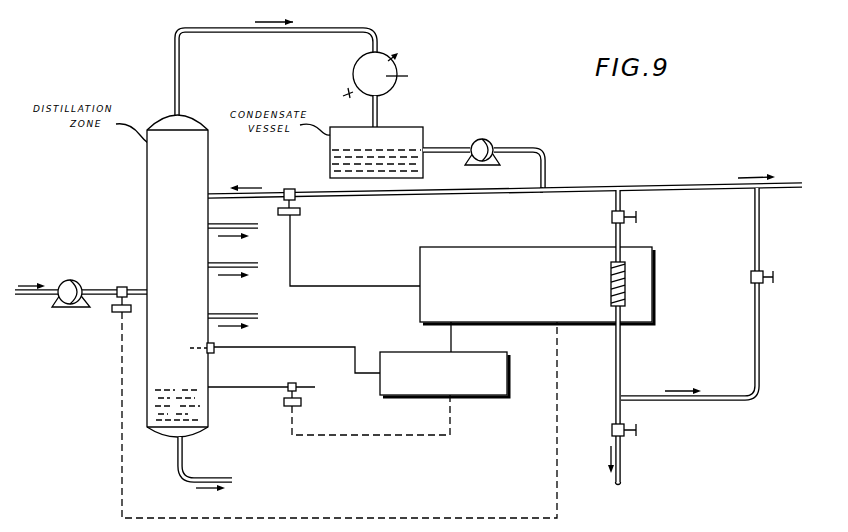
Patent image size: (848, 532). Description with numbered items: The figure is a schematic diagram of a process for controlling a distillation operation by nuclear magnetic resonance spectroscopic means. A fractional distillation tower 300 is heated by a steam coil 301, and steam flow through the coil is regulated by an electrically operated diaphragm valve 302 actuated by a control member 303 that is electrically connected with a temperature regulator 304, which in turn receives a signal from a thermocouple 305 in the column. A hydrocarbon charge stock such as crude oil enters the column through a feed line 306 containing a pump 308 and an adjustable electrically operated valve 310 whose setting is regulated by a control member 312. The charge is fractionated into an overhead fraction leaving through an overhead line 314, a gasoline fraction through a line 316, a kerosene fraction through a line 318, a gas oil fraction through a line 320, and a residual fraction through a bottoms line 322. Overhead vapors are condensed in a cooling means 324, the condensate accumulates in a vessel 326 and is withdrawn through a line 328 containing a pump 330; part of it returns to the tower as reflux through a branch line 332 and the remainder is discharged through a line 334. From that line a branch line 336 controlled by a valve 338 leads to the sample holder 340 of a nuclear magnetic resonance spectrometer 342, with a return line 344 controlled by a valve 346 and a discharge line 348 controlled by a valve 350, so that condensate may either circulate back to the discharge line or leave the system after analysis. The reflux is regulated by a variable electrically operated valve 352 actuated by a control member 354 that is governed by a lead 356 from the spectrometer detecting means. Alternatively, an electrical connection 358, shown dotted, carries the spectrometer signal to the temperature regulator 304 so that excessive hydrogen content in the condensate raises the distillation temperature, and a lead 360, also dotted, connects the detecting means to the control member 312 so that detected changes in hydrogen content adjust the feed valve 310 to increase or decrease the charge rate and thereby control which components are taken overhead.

The fractional distillation tower 300 is at (191, 271).
The steam coil 301 is at (198, 395).
The electrically operated diaphragm valve 302 is at (292, 383).
The control member 303 is at (300, 405).
The temperature regulator 304 is at (434, 352).
The thermocouple 305 is at (216, 352).
The feed line 306 is at (41, 297).
The pump 308 is at (72, 281).
The adjustable electrically operated valve 310 is at (122, 287).
The control member 312 is at (117, 313).
The overhead line 314 is at (172, 58).
The line 316 is at (216, 228).
The line 318 is at (216, 267).
The line 320 is at (216, 318).
The bottoms line 322 is at (199, 479).
The cooling means 324 is at (384, 62).
The vessel 326 is at (404, 128).
The line 328 is at (545, 156).
The pump 330 is at (479, 141).
The branch line 332 is at (394, 198).
The line 334 is at (668, 184).
The branch line 336 is at (622, 240).
The valve 338 is at (611, 218).
The sample holder 340 is at (628, 282).
The nuclear magnetic resonance spectrometer 342 is at (476, 247).
The return line 344 is at (759, 240).
The valve 346 is at (751, 280).
The discharge line 348 is at (623, 466).
The valve 350 is at (612, 432).
The variable electrically operated valve 352 is at (289, 189).
The control member 354 is at (298, 215).
The lead 356 is at (320, 286).
The electrical connection 358 is at (453, 340).
The lead 360 is at (362, 518).